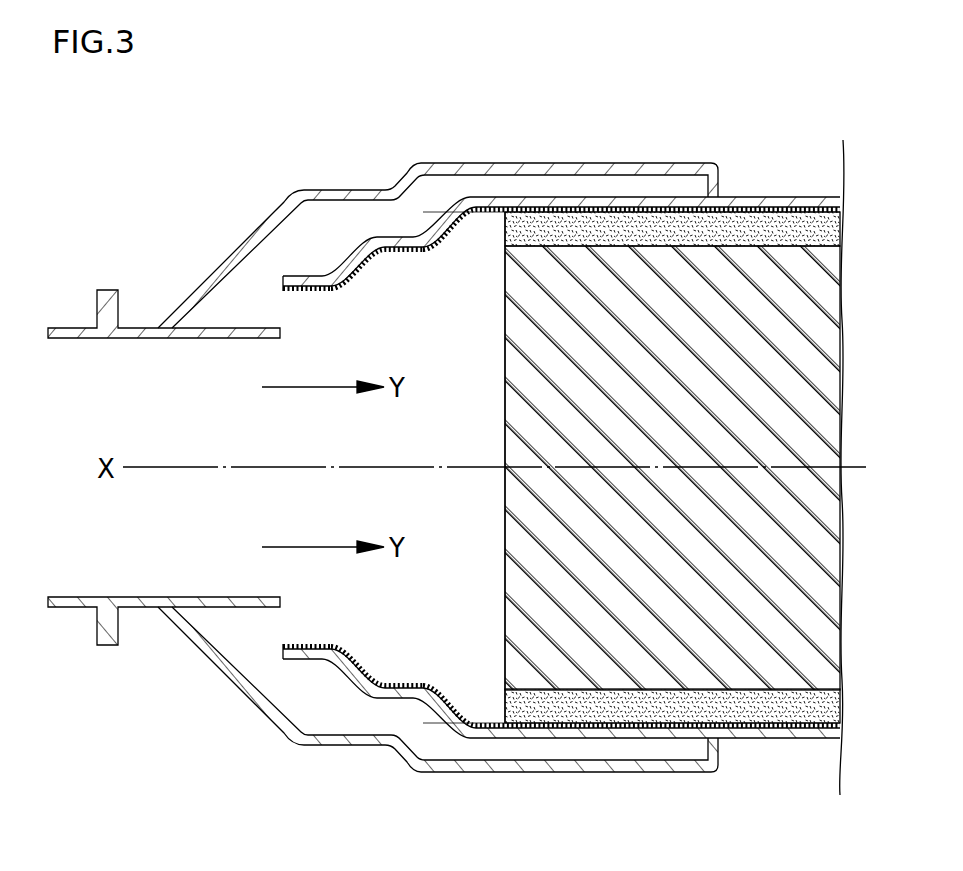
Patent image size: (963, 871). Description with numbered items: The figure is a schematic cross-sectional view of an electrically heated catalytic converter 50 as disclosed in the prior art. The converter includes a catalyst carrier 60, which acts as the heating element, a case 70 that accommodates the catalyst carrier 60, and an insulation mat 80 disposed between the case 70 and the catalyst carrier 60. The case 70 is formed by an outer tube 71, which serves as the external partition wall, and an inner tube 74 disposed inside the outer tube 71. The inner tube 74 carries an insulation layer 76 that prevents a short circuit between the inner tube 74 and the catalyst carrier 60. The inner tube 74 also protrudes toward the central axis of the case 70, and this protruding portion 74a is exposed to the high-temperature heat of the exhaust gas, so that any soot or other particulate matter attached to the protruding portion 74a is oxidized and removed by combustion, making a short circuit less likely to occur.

The electrically heated catalytic converter 50 is at (768, 122).
The catalyst carrier 60 is at (718, 667).
The case 70 is at (214, 212).
The outer tube 71 is at (562, 171).
The inner tube 74 is at (527, 200).
The protruding portion 74a is at (377, 238).
The insulation layer 76 is at (318, 292).
The insulation mat 80 is at (623, 708).